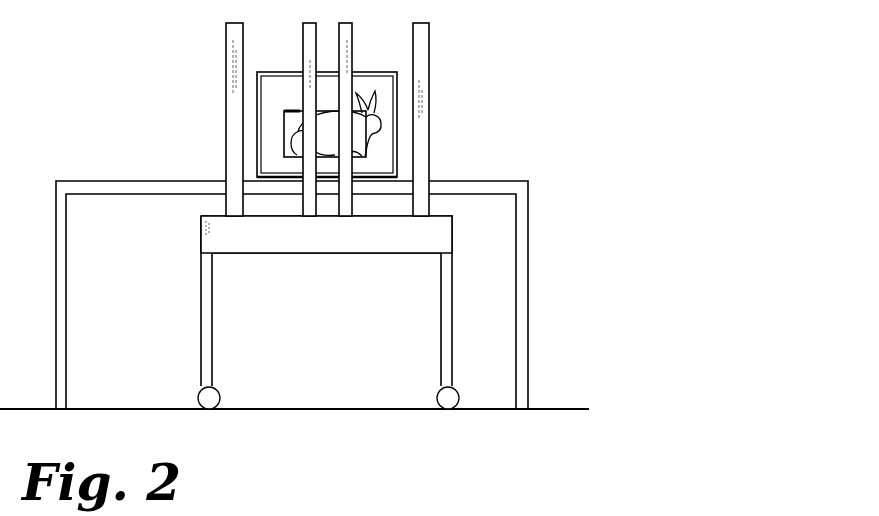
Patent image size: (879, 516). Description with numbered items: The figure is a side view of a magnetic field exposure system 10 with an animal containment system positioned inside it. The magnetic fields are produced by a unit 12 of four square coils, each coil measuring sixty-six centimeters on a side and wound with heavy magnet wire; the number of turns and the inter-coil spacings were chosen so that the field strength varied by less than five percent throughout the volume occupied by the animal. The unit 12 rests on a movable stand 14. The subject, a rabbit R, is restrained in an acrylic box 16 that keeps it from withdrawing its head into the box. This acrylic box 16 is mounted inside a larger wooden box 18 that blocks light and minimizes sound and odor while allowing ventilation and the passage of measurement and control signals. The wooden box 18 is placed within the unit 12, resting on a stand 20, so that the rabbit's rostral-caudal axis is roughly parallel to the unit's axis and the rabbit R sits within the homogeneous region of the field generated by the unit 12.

The magnetic field exposure system 10 is at (122, 127).
The unit of four square coils 12 is at (226, 101).
The movable stand 14 is at (201, 300).
The acrylic box 16 is at (367, 149).
The wooden box 18 is at (395, 104).
The stand 20 is at (529, 322).
The rabbit R is at (372, 108).